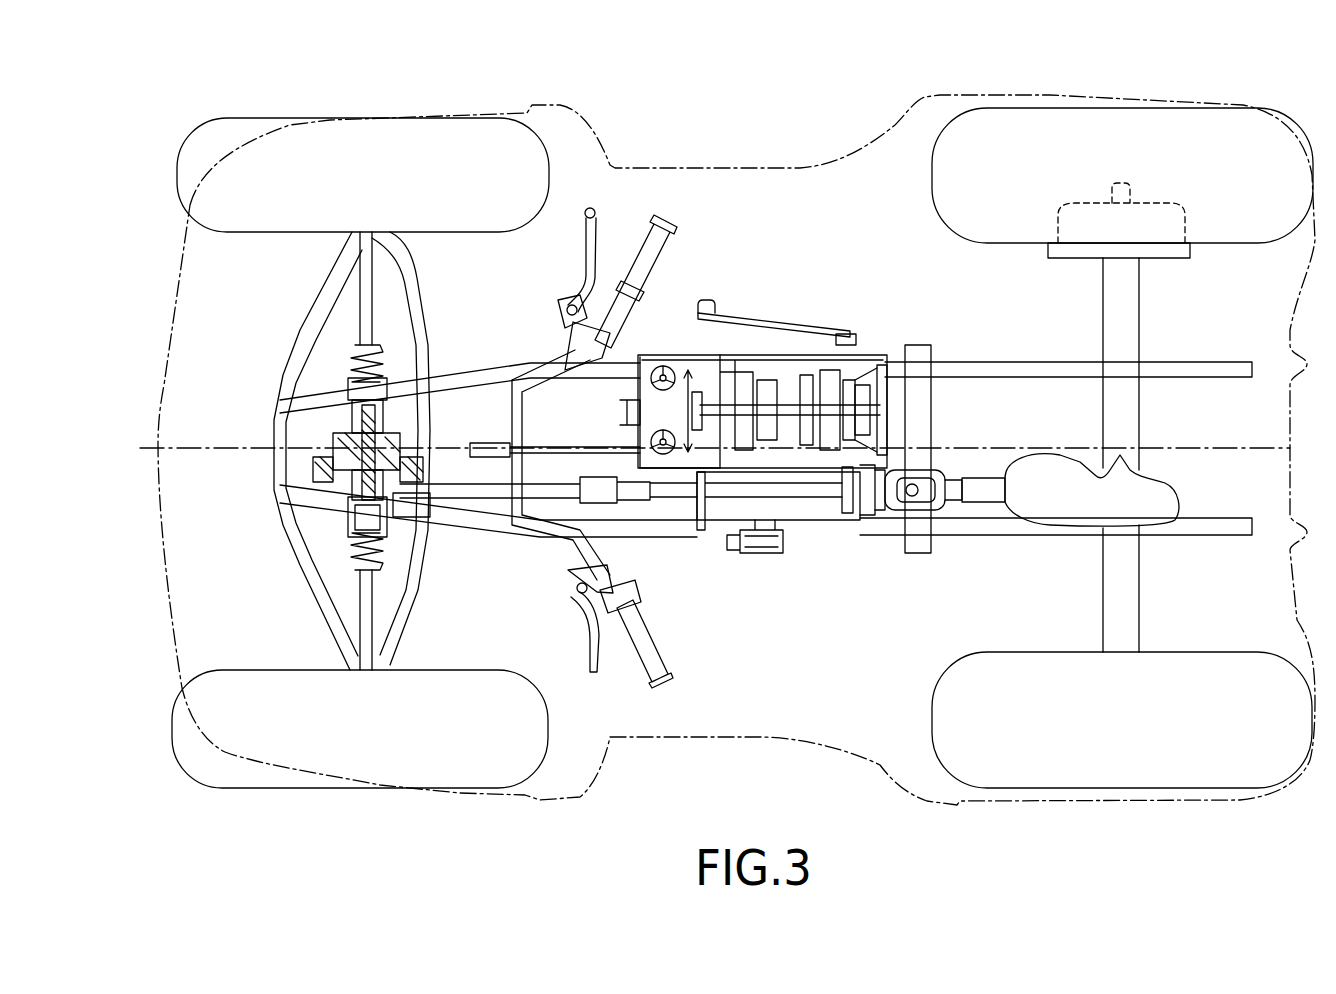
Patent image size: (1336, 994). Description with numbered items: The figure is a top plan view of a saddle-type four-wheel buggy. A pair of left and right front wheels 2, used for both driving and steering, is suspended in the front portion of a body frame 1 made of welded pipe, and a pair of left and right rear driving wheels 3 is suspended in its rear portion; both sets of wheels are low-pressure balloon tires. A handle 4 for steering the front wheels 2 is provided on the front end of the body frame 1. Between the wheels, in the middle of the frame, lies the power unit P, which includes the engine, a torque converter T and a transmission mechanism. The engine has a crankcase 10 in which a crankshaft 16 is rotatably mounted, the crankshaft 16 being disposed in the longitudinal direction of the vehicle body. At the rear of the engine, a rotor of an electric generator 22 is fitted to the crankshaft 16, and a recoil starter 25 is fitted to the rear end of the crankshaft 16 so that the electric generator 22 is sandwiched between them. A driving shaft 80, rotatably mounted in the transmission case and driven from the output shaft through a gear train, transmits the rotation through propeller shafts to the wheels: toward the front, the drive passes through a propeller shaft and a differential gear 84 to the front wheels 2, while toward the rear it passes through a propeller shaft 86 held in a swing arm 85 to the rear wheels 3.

The body frame 1 is at (986, 360).
The front wheels 2 is at (397, 128).
The rear driving wheels 3 is at (1213, 125).
The handle 4 is at (540, 360).
The differential gear 84 is at (325, 440).
The crankcase 10 is at (806, 340).
The torque converter T is at (655, 360).
The crankshaft 16 is at (700, 368).
The power unit P is at (741, 348).
The electric generator 22 is at (838, 340).
The recoil starter 25 is at (885, 368).
The driving shaft 80 is at (812, 495).
The propeller shaft 86 is at (948, 520).
The swing arm 85 is at (987, 505).